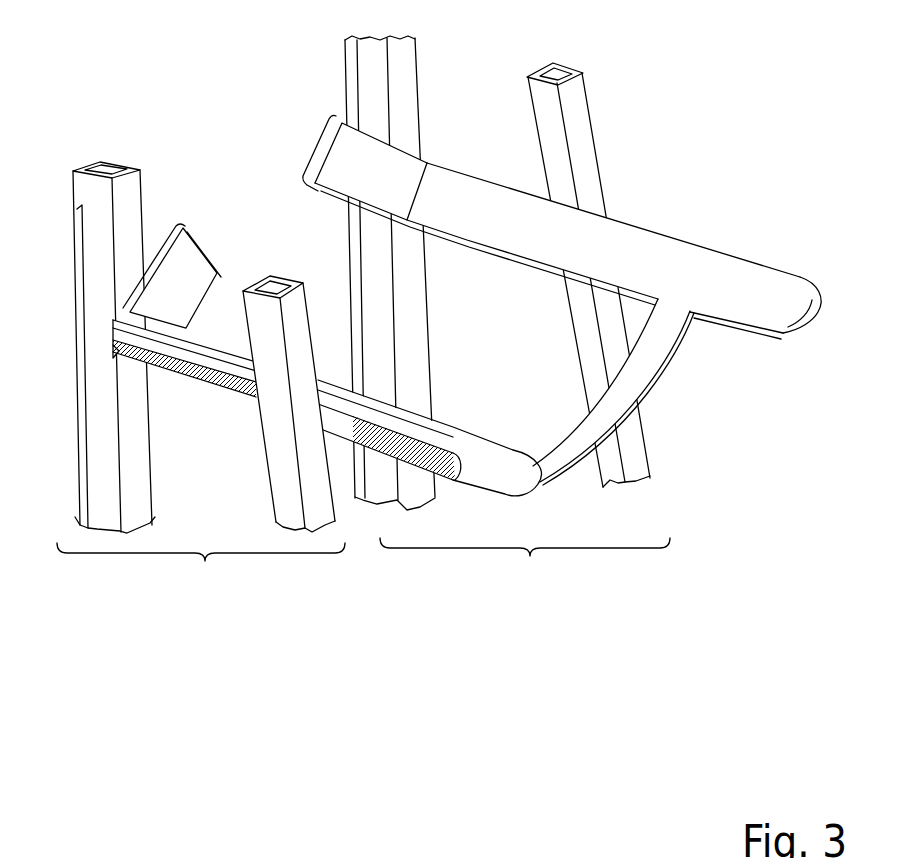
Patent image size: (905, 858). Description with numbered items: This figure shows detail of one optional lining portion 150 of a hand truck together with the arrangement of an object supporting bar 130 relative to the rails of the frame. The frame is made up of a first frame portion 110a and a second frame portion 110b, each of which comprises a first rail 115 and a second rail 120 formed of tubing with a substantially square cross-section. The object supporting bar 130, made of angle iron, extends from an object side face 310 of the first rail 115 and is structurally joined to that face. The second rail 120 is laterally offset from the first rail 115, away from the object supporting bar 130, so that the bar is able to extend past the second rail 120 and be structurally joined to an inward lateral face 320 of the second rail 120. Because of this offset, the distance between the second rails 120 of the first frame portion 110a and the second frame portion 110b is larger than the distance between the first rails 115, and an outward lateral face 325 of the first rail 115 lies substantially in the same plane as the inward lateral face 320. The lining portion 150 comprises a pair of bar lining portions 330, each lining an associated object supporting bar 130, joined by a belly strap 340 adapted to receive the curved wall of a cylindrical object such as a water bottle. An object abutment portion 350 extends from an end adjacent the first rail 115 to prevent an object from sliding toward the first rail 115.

The first frame portion 110a is at (201, 564).
The second frame portion 110b is at (525, 560).
The first rail 115 is at (368, 77).
The second rail 120 is at (582, 142).
The object supporting bar 130 is at (218, 377).
The lining portion 150 is at (472, 305).
The object side face 310 is at (414, 98).
The inward lateral face 320 is at (561, 121).
The outward lateral face 325 is at (114, 395).
The bar lining portion 330 is at (535, 230).
The belly strap 340 is at (603, 432).
The object abutment portion 350 is at (380, 173).